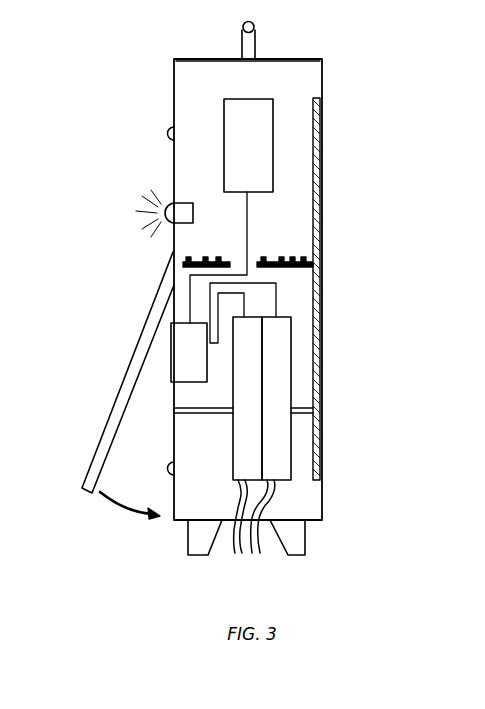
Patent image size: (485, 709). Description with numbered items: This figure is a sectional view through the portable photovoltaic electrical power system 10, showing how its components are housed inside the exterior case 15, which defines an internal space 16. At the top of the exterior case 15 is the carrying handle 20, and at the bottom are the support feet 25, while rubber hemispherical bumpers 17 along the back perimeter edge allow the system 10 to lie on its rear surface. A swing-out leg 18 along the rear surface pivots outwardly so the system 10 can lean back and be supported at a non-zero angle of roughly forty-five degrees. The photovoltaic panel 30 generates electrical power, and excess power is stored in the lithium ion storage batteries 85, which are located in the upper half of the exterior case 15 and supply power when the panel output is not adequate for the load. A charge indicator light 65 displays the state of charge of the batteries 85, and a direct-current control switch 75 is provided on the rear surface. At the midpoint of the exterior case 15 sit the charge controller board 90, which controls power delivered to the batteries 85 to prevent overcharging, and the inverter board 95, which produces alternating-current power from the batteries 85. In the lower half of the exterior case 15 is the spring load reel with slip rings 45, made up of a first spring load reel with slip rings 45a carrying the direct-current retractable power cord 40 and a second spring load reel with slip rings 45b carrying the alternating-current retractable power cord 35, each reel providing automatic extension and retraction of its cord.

The system 10 is at (104, 578).
The exterior case 15 is at (313, 58).
The internal space 16 is at (286, 163).
The rubber hemispherical bumpers 17 is at (168, 136).
The swing-out leg 18 is at (112, 411).
The carrying handle 20 is at (256, 25).
The support feet 25 is at (190, 535).
The photovoltaic panel 30 is at (316, 183).
The 120-VAC retractable power cord 35 is at (268, 504).
The 12-VDC retractable power cord 40 is at (240, 503).
The spring load reel with slip rings 45 is at (259, 398).
The first spring load reel with slip rings 45a is at (228, 424).
The second spring load reel with slip rings 45b is at (279, 438).
The charge indicator light 65 is at (168, 205).
The 12-VDC control switch 75 is at (168, 328).
The lithium ion storage batteries 85 is at (224, 134).
The charge controller board 90 is at (185, 265).
The inverter board 95 is at (306, 268).